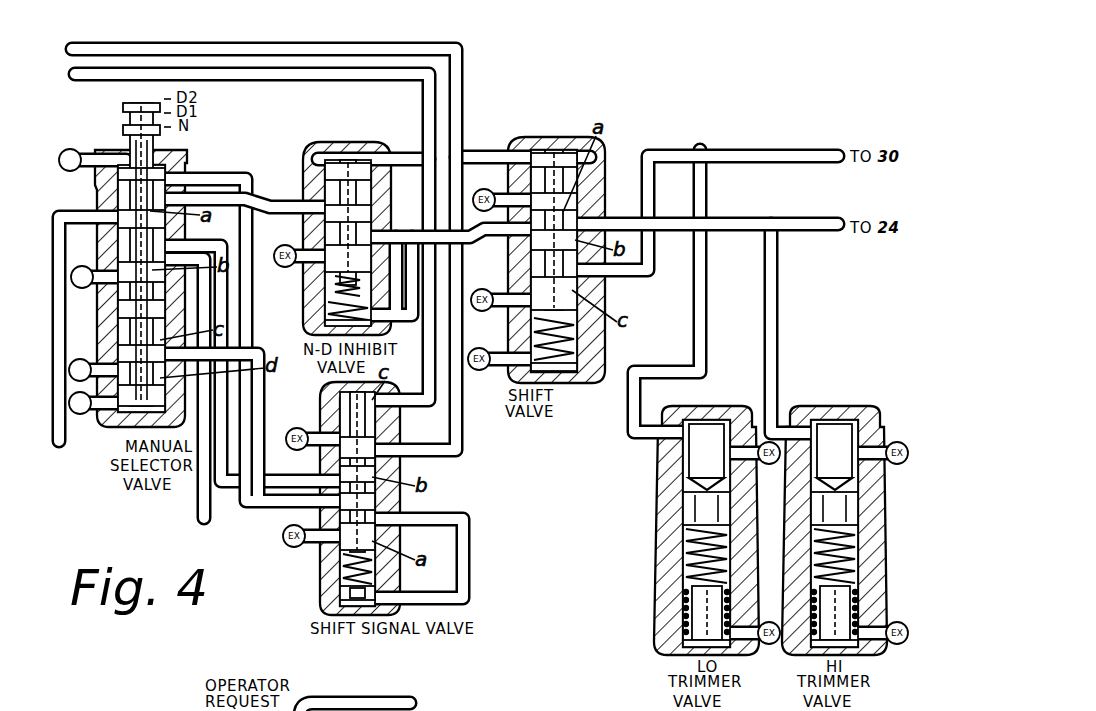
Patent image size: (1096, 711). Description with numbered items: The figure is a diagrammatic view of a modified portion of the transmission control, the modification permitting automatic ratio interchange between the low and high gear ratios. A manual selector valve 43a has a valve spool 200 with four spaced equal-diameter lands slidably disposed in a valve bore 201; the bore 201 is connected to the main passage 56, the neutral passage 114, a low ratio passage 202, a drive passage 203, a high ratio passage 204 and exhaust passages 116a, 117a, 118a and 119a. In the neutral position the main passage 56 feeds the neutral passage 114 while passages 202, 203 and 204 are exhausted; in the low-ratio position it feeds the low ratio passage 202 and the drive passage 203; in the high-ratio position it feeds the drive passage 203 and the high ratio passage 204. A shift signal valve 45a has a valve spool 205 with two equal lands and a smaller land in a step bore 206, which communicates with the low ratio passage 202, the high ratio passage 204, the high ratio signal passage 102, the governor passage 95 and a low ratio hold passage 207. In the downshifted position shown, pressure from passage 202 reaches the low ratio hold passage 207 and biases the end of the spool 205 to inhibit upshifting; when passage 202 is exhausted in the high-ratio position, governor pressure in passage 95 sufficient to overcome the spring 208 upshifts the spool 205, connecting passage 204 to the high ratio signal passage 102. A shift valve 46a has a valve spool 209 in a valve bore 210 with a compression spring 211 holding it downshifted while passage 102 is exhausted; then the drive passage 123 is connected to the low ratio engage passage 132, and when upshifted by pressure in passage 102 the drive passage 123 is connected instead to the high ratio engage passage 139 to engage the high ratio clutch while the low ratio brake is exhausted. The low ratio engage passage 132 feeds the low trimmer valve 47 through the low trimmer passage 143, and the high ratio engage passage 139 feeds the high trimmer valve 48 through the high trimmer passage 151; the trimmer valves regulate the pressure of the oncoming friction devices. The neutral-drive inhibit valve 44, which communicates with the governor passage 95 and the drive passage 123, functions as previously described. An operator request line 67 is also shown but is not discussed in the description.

The high ratio signal passage 102 is at (298, 48).
The governor passage 95 is at (368, 73).
The high ratio passage 204 is at (240, 172).
The drive passage 203 is at (282, 200).
The neutral-drive inhibit valve 44 is at (347, 146).
The valve spool 200 is at (145, 235).
The valve bore 201 is at (152, 297).
The low ratio passage 202 is at (228, 421).
The manual selector valve 43a is at (190, 407).
The exhaust passage 119a is at (70, 149).
The exhaust passage 118a is at (82, 266).
The exhaust passage 117a is at (80, 359).
The exhaust passage 116a is at (82, 414).
The main passage 56 is at (92, 355).
The neutral passage 114 is at (212, 521).
The step bore 206 is at (373, 446).
The valve spool 205 is at (372, 522).
The low ratio hold passage 207 is at (471, 550).
The spring 208 is at (347, 578).
The shift signal valve 45a is at (320, 598).
The shift valve 46a is at (553, 135).
The valve spool 209 is at (562, 220).
The valve bore 210 is at (572, 266).
The compression spring 211 is at (568, 337).
The drive passage 123 is at (470, 247).
The low ratio engage passage 132 is at (681, 150).
The high ratio engage passage 139 is at (744, 218).
The low trimmer passage 143 is at (707, 305).
The high trimmer passage 151 is at (778, 300).
The low trimmer valve 47 is at (655, 483).
The high trimmer valve 48 is at (858, 411).
The operator request line 67 is at (412, 702).